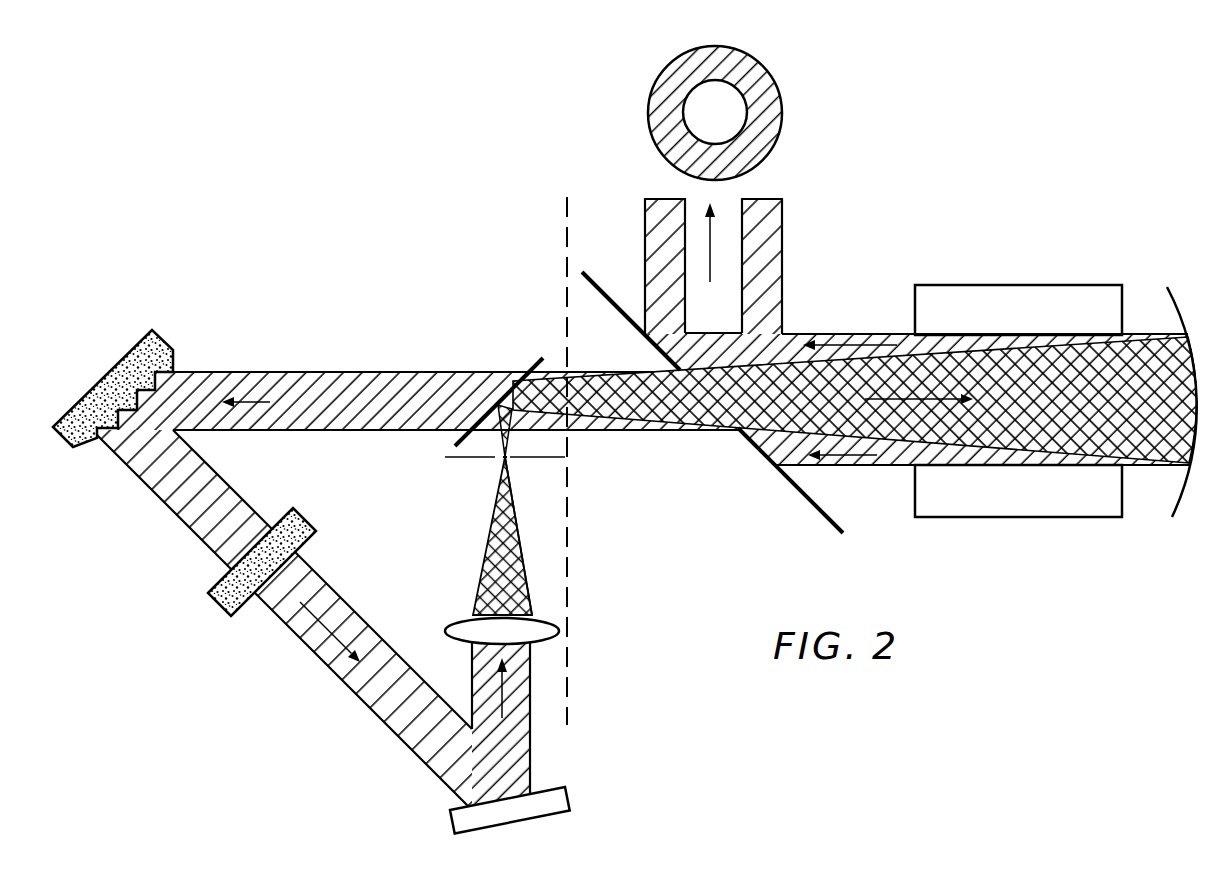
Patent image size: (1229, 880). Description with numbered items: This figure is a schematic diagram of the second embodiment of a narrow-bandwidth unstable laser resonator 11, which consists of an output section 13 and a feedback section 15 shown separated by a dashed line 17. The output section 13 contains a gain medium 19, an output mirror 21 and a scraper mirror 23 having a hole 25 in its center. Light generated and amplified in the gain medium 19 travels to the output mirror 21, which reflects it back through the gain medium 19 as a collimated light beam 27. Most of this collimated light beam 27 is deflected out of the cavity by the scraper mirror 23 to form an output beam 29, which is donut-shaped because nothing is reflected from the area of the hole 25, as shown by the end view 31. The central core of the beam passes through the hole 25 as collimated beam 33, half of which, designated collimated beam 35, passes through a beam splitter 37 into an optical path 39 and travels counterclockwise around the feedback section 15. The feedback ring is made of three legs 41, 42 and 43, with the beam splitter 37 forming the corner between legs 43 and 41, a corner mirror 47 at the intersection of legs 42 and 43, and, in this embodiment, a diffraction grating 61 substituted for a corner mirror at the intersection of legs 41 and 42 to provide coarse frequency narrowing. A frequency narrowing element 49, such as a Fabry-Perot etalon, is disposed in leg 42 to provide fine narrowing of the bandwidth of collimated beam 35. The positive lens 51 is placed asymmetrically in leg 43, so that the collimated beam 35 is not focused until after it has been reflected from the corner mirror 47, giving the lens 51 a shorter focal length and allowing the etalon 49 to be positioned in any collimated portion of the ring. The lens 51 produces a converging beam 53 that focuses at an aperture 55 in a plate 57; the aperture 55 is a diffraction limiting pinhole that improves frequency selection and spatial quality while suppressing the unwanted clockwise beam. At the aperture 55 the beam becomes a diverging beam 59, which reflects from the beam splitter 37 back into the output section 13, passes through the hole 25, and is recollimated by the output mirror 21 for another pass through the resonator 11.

The unstable laser resonator 11 is at (404, 125).
The output section 13 is at (865, 205).
The feedback section 15 is at (345, 250).
The dashed line 17 is at (565, 290).
The gain medium 19 is at (1000, 287).
The output mirror 21 is at (1175, 500).
The scraper mirror 23 is at (845, 528).
The hole 25 is at (698, 402).
The collimated light beam 27 is at (840, 334).
The output beam 29 is at (783, 266).
The end view 31 is at (766, 58).
The collimated beam 33 is at (591, 371).
The collimated beam 35 is at (343, 368).
The beam splitter 37 is at (530, 359).
The optical path 39 is at (227, 363).
The leg 41 is at (313, 438).
The leg 42 is at (345, 594).
The leg 43 is at (473, 573).
The corner mirror 47 is at (552, 785).
The frequency narrowing element 49 is at (216, 606).
The positive lens 51 is at (452, 620).
The converging beam 53 is at (522, 547).
The aperture 55 is at (507, 460).
The plate 57 is at (468, 460).
The diverging beam 59 is at (510, 442).
The diffraction grating 61 is at (122, 358).